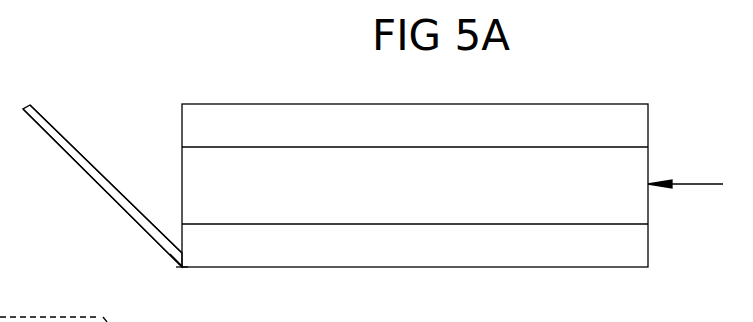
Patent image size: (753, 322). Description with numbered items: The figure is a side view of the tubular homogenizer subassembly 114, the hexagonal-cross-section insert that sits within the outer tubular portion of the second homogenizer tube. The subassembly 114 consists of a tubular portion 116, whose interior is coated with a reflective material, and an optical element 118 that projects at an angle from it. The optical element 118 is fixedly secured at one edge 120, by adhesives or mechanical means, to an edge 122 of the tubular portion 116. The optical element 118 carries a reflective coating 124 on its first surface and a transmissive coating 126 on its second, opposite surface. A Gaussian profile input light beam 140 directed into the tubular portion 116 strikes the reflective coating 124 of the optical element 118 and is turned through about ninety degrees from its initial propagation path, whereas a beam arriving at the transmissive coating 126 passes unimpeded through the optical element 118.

The tubular homogenizer subassembly 114 is at (415, 138).
The tubular portion 116 is at (535, 104).
The optical element 118 is at (132, 185).
The edge 120 is at (173, 256).
The edge 122 is at (182, 268).
The reflective coating 124 is at (72, 147).
The transmissive coating 126 is at (117, 210).
The input light beam 140 is at (693, 184).